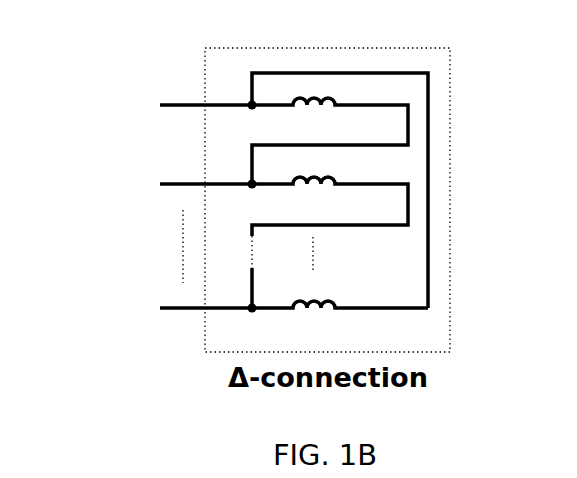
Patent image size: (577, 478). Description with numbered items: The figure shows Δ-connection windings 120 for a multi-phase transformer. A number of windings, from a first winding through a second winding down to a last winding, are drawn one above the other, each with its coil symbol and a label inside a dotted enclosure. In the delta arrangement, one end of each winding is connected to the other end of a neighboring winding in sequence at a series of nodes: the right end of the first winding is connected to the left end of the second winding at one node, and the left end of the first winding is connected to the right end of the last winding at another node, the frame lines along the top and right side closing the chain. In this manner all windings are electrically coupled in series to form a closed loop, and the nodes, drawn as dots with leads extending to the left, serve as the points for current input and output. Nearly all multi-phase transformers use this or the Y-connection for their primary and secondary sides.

The Δ-connection windings 120 is at (191, 75).